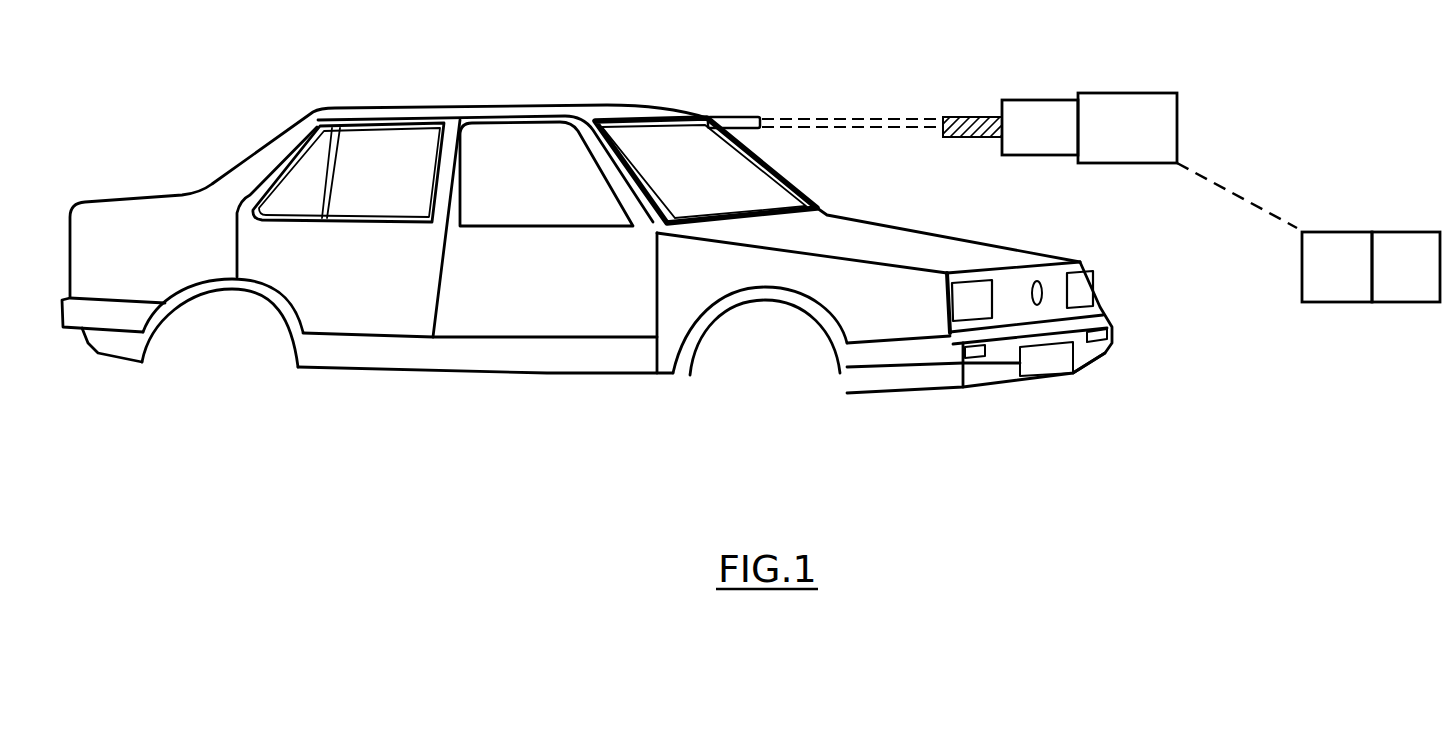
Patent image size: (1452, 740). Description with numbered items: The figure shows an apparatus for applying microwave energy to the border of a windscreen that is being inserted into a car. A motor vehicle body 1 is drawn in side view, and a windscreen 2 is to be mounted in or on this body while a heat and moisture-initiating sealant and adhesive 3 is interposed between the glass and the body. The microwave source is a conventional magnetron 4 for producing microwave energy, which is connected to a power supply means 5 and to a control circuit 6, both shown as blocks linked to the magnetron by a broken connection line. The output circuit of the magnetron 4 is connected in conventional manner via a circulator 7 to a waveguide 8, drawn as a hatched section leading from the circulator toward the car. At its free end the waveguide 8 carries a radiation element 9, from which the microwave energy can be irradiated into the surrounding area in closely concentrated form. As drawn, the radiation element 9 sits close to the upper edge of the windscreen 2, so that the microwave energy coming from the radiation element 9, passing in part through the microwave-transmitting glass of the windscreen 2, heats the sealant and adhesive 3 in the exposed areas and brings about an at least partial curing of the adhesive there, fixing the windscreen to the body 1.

The motor vehicle body 1 is at (429, 392).
The windscreen 2 is at (663, 148).
The sealant and adhesive 3 is at (618, 120).
The magnetron 4 is at (1145, 115).
The power supply means 5 is at (1347, 285).
The control circuit 6 is at (1403, 285).
The circulator 7 is at (1040, 128).
The waveguide 8 is at (975, 117).
The radiation element 9 is at (733, 117).